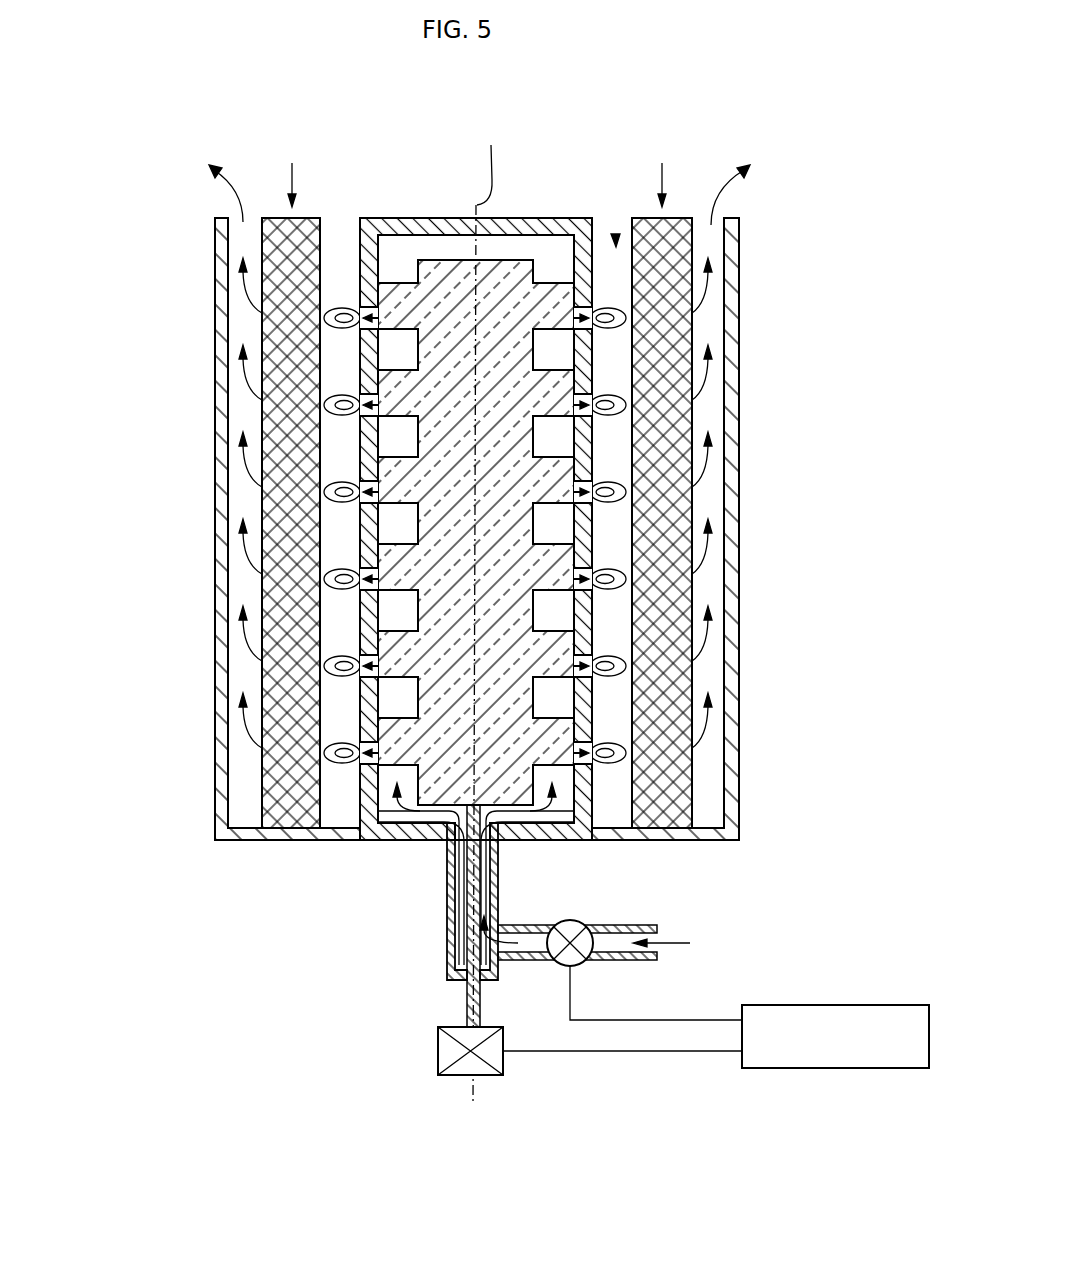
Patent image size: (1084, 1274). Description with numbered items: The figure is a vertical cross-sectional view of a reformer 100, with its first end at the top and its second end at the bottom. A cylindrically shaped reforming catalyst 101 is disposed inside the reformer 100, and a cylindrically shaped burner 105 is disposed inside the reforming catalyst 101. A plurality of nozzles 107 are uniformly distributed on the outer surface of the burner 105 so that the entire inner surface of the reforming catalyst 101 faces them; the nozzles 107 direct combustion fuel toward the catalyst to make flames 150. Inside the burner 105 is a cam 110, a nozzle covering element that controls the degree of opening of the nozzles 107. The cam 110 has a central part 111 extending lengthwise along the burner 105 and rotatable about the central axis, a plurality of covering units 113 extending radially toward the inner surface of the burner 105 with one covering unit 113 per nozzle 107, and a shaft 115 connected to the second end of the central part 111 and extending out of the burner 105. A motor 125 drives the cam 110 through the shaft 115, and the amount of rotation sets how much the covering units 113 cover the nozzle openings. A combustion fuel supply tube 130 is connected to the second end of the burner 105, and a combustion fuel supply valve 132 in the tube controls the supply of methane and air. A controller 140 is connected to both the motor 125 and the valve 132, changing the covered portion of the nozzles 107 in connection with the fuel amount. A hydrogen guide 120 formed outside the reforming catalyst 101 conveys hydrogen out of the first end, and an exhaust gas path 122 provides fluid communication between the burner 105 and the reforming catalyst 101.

The reformer 100 is at (136, 236).
The reforming catalyst 101 is at (688, 515).
The burner 105 is at (534, 228).
The nozzles 107 is at (360, 640).
The cam 110 is at (423, 589).
The central part 111 is at (457, 262).
The covering units 113 is at (392, 285).
The shaft 115 is at (468, 884).
The hydrogen guide 120 is at (732, 544).
The exhaust gas path 122 is at (615, 238).
The motor 125 is at (438, 1052).
The combustion fuel supply tube 130 is at (630, 924).
The combustion fuel supply valve 132 is at (570, 918).
The controller 140 is at (836, 1068).
The flames 150 is at (340, 307).